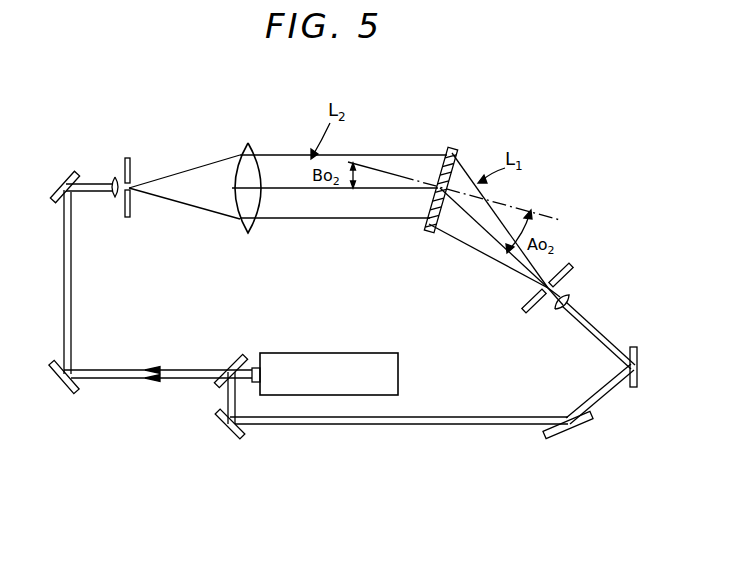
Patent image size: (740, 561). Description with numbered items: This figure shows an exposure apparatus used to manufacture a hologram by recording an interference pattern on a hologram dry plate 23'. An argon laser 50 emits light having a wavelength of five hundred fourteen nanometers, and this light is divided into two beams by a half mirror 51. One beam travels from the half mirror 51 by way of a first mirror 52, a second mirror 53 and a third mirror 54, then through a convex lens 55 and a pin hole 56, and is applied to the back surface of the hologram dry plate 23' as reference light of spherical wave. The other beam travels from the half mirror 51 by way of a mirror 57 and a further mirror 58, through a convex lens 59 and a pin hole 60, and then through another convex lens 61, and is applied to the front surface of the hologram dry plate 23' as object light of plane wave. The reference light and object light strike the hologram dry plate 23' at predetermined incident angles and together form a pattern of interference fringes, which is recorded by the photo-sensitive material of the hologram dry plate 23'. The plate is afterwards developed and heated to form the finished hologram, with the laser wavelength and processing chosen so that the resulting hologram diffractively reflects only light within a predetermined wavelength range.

The argon laser 50 is at (398, 371).
The half mirror 51 is at (236, 359).
The mirror 52 is at (226, 432).
The mirror 53 is at (569, 433).
The mirror 54 is at (637, 357).
The convex lens 55 is at (571, 300).
The pin hole 56 is at (574, 268).
The mirror 57 is at (67, 393).
The mirror 58 is at (63, 182).
The convex lens 59 is at (114, 180).
The pin hole 60 is at (131, 167).
The convex lens 61 is at (250, 143).
The hologram dry plate 23' is at (465, 175).